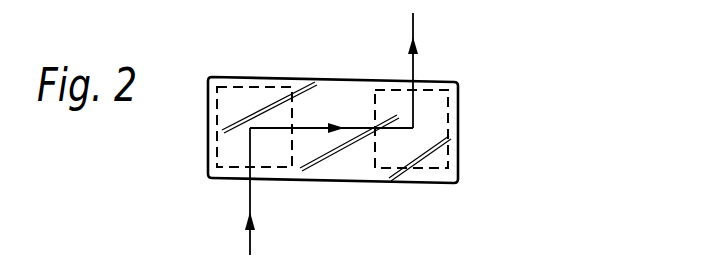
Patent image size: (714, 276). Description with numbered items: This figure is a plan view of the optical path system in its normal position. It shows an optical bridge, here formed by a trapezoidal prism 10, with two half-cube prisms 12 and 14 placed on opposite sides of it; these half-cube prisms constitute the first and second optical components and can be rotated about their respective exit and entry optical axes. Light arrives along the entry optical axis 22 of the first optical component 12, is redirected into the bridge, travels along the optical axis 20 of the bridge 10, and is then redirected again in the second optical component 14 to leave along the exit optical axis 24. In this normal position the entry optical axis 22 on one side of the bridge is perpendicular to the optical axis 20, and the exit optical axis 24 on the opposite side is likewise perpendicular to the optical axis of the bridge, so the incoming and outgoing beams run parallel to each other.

The trapezoidal prism 10 is at (299, 78).
The half-cube prism 12 is at (208, 160).
The half-cube prism 14 is at (457, 168).
The optical axis of the optical bridge 20 is at (347, 128).
The entry optical axis of the first optical component 22 is at (252, 246).
The exit optical axis of the second optical component 24 is at (415, 62).